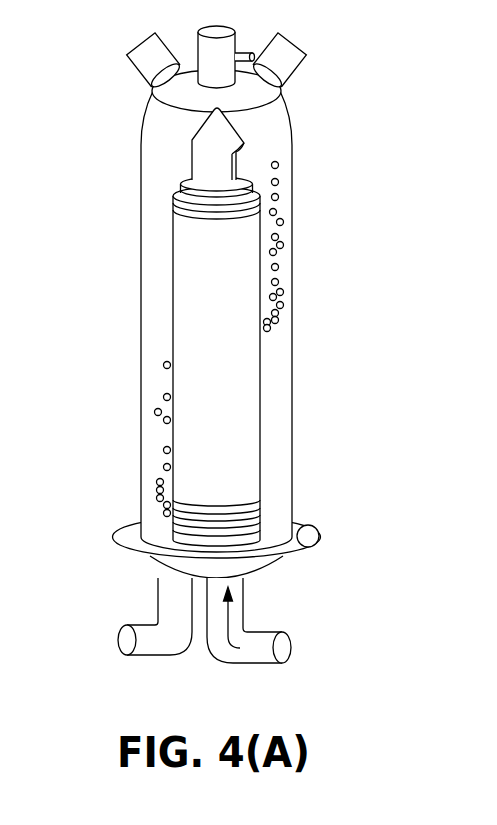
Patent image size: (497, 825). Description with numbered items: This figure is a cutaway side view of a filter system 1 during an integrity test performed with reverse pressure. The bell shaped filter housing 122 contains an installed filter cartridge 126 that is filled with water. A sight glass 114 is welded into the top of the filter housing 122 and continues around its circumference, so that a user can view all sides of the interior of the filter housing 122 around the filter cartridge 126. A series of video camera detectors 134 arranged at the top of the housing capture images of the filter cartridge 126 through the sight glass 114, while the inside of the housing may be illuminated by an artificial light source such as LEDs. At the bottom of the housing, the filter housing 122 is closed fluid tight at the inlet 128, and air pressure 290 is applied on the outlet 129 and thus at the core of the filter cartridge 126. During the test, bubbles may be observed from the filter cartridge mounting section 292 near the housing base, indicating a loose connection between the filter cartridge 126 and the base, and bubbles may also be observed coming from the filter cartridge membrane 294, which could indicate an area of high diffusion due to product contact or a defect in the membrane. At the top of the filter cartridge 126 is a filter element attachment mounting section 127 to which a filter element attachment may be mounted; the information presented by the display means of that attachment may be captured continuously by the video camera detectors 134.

The filter system 1 is at (219, 338).
The sight glass 114 is at (177, 106).
The filter housing 122 is at (121, 265).
The filter cartridge 126 is at (250, 412).
The filter element attachment mounting section 127 is at (197, 155).
The inlet 128 is at (111, 622).
The outlet 129 is at (280, 632).
The video camera detectors 134 is at (133, 53).
The air pressure 290 is at (240, 648).
The filter cartridge mounting section 292 is at (146, 506).
The filter cartridge membrane 294 is at (299, 322).